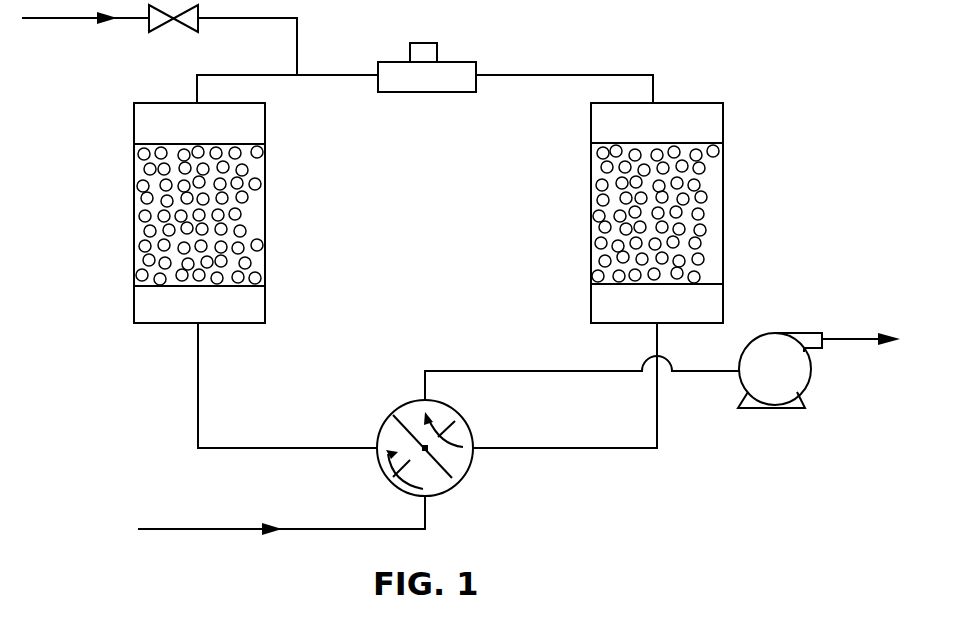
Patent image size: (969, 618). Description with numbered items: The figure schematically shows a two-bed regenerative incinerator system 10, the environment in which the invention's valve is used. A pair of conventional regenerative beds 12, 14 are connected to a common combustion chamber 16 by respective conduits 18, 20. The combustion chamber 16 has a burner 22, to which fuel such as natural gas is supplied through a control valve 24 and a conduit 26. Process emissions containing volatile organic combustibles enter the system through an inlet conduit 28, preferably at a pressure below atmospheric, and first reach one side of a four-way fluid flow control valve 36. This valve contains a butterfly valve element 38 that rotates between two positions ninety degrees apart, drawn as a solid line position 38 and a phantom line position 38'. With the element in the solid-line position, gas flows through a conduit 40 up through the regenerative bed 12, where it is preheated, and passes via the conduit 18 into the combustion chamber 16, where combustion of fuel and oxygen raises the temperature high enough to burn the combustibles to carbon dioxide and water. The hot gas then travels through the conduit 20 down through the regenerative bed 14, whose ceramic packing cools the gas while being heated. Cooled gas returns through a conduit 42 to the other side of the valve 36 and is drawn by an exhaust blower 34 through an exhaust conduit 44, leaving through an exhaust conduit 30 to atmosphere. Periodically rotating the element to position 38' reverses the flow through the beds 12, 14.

The regenerative incinerator system 10 is at (696, 76).
The regenerative bed 12 is at (266, 214).
The regenerative bed 14 is at (723, 209).
The combustion chamber 16 is at (420, 87).
The conduit 18 is at (300, 74).
The conduit 20 is at (553, 74).
The burner 22 is at (432, 52).
The control valve 24 is at (152, 28).
The conduit 26 is at (297, 22).
The inlet conduit 28 is at (315, 528).
The exhaust conduit 30 is at (843, 338).
The exhaust blower 34 is at (770, 392).
The four-way fluid flow control valve 36 is at (387, 399).
The butterfly valve element 38 is at (453, 462).
The butterfly valve element phantom line position 38' is at (470, 424).
The conduit 40 is at (199, 394).
The conduit 42 is at (657, 413).
The exhaust conduit 44 is at (525, 371).